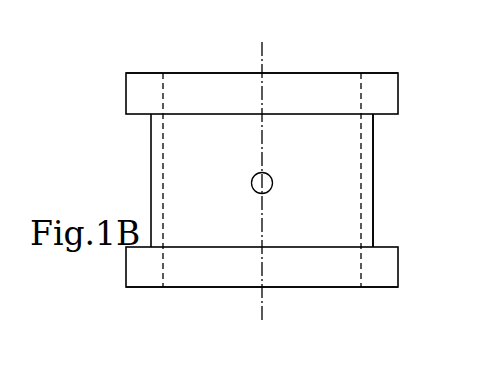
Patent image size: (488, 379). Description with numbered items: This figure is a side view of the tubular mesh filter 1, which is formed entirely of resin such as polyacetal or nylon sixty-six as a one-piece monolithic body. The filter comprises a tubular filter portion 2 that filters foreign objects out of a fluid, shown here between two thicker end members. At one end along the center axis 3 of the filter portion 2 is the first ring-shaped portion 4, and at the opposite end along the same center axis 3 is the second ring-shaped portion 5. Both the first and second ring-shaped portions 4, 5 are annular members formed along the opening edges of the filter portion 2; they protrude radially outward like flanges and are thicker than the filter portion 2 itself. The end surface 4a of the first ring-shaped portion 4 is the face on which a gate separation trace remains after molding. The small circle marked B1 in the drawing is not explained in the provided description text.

The tubular mesh filter 1 is at (384, 66).
The tubular filter portion 2 is at (374, 195).
The center axis 3 is at (262, 305).
The first ring-shaped portion 4 is at (130, 77).
The end surface 4a is at (147, 73).
The second ring-shaped portion 5 is at (125, 288).
The hole B1 is at (268, 174).